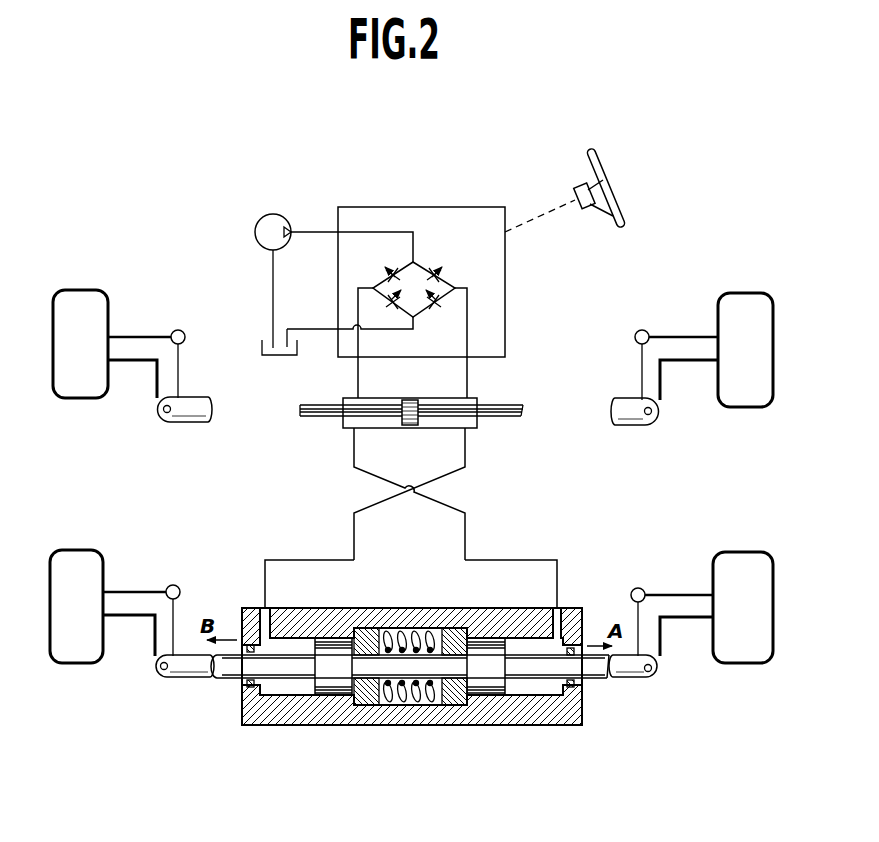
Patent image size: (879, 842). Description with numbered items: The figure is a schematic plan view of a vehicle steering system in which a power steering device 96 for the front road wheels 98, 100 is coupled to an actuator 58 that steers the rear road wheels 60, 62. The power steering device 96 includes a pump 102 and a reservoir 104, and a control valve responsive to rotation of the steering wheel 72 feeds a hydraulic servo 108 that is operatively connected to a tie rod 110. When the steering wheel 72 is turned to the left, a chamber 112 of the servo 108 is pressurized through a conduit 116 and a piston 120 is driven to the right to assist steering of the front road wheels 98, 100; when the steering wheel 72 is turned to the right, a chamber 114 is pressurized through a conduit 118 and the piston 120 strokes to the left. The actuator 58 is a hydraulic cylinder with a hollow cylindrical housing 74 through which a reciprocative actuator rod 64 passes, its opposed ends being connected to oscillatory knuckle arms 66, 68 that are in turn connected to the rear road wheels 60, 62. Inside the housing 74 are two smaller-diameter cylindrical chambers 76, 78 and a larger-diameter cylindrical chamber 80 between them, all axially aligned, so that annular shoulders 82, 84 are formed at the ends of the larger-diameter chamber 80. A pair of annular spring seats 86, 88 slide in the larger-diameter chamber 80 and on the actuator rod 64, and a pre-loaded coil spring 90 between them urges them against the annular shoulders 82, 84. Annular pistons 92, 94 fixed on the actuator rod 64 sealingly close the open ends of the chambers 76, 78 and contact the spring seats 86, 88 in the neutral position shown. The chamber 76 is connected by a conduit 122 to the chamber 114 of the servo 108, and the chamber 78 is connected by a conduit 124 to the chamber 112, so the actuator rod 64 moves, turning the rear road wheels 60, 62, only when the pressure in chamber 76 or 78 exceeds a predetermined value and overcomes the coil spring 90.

The actuator 58 is at (410, 691).
The rear road wheel 60 is at (82, 657).
The rear road wheel 62 is at (749, 655).
The actuator rod 64 is at (530, 700).
The knuckle arm 66 is at (173, 615).
The knuckle arm 68 is at (656, 645).
The steering wheel 72 is at (605, 177).
The housing 74 is at (415, 612).
The smaller-diameter cylindrical chamber 76 is at (270, 700).
The smaller-diameter cylindrical chamber 78 is at (572, 720).
The larger-diameter cylindrical chamber 80 is at (408, 705).
The annular shoulder 82 is at (367, 612).
The annular shoulder 84 is at (471, 617).
The spring seat 86 is at (366, 705).
The spring seat 88 is at (453, 705).
The coil spring 90 is at (436, 617).
The piston 92 is at (322, 700).
The piston 94 is at (484, 700).
The power steering device 96 is at (436, 393).
The front road wheel 98 is at (104, 290).
The front road wheel 100 is at (743, 296).
The pump 102 is at (275, 214).
The reservoir 104 is at (424, 270).
The hydraulic servo 108 is at (393, 428).
The tie rod 110 is at (196, 398).
The chamber 112 is at (345, 420).
The chamber 114 is at (470, 403).
The conduit 116 is at (356, 296).
The conduit 118 is at (467, 320).
The piston 120 is at (405, 400).
The conduit 122 is at (352, 535).
The conduit 124 is at (465, 535).